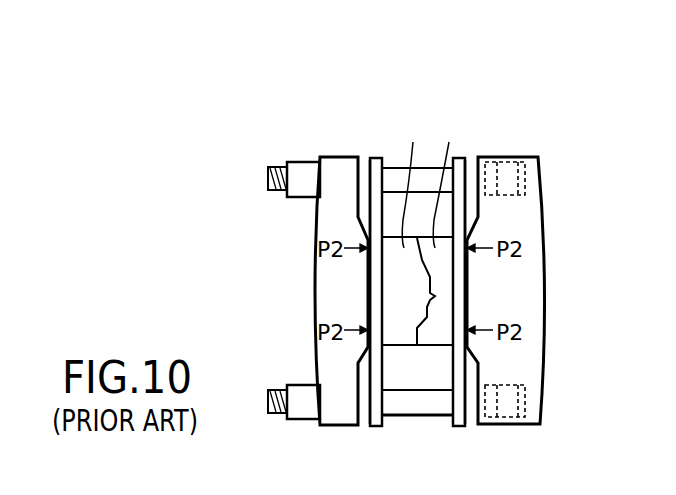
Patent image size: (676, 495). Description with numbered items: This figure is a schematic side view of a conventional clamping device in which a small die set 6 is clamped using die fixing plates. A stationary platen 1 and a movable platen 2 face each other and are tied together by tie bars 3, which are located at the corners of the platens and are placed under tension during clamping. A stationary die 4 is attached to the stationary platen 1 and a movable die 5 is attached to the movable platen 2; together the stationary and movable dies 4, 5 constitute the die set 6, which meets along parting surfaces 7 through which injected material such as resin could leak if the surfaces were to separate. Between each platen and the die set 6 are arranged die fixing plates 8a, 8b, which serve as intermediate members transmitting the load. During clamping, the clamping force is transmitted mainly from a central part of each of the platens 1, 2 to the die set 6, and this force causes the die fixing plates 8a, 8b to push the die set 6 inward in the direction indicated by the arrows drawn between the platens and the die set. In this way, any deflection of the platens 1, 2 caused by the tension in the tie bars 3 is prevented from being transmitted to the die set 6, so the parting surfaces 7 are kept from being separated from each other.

The stationary platen 1 is at (527, 310).
The movable platen 2 is at (317, 298).
The tie bars 3 is at (397, 177).
The stationary die 4 is at (444, 185).
The movable die 5 is at (411, 185).
The die set 6 is at (418, 250).
The parting surfaces 7 is at (433, 300).
The die fixing plate 8a is at (463, 293).
The die fixing plate 8b is at (375, 283).